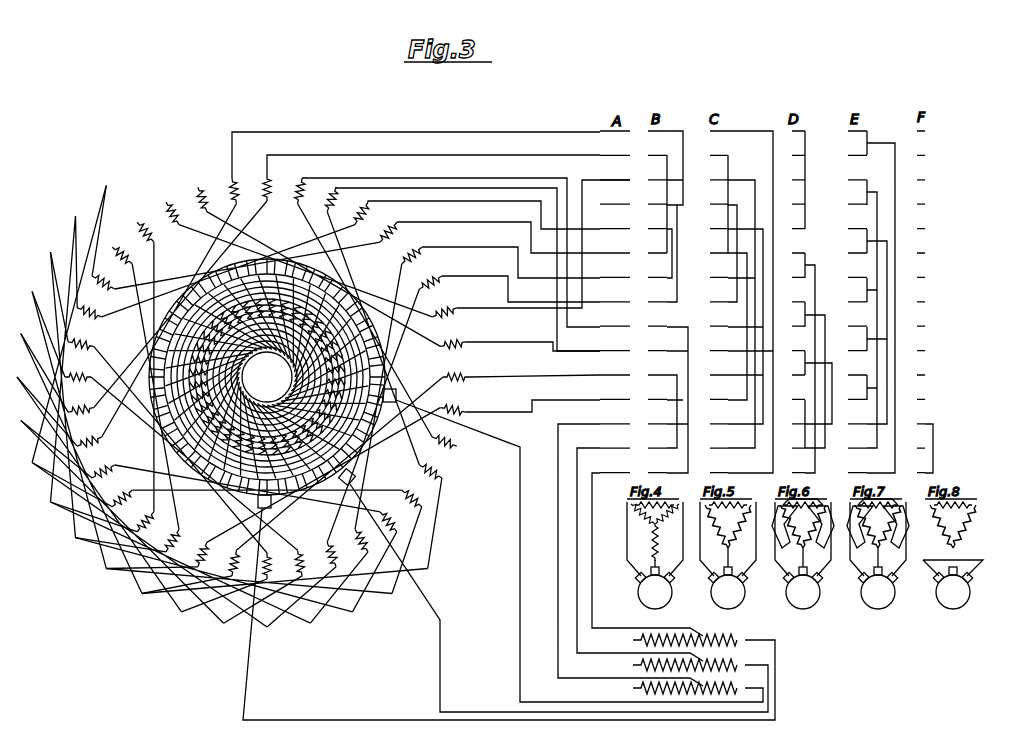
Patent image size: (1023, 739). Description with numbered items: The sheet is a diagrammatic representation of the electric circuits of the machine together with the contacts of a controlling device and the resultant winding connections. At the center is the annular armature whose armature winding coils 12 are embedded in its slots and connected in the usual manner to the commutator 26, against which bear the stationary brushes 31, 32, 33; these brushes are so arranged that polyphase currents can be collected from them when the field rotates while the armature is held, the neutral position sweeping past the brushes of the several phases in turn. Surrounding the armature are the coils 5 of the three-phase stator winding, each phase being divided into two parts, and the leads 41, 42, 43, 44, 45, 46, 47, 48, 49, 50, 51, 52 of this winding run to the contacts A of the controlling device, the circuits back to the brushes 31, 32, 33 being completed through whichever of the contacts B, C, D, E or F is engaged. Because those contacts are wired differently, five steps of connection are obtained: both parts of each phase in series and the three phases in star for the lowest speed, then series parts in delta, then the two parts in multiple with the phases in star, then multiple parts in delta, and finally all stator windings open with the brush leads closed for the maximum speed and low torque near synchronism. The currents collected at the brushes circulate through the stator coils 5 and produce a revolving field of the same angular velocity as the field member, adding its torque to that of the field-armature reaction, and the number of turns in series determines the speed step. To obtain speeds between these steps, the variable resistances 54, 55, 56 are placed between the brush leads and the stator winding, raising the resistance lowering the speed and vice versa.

In FIG. 3, the coils of the stator winding 5 is at (160, 205).
In FIG. 3, the coils of the armature winding 12 is at (240, 262).
In FIG. 3, the commutator 26 is at (332, 268).
In FIG. 3, the brush 31 is at (272, 502).
In FIG. 4, the brush 31 is at (627, 582).
In FIG. 7, the brush 31 is at (850, 582).
In FIG. 3, the brush 32 is at (352, 470).
In FIG. 4, the brush 32 is at (666, 560).
In FIG. 7, the brush 32 is at (889, 560).
In FIG. 3, the brush 33 is at (389, 388).
In FIG. 4, the brush 33 is at (679, 585).
In FIG. 7, the brush 33 is at (902, 585).
In FIG. 3, the lead 41 is at (478, 412).
In FIG. 3, the lead 42 is at (480, 377).
In FIG. 3, the lead 43 is at (482, 342).
In FIG. 3, the lead 44 is at (466, 310).
In FIG. 3, the lead 45 is at (450, 278).
In FIG. 3, the lead 46 is at (430, 248).
In FIG. 3, the lead 47 is at (410, 226).
In FIG. 3, the lead 48 is at (392, 203).
In FIG. 3, the lead 49 is at (343, 200).
In FIG. 3, the lead 50 is at (344, 184).
In FIG. 3, the lead 51 is at (310, 162).
In FIG. 3, the lead 52 is at (232, 160).
In FIG. 3, the variable resistance 54 is at (740, 636).
In FIG. 3, the variable resistance 55 is at (750, 662).
In FIG. 3, the variable resistance 56 is at (752, 690).